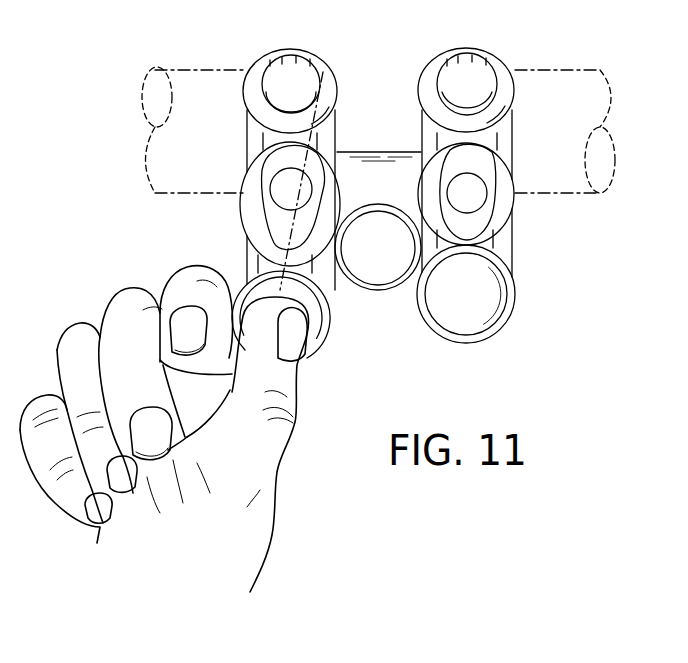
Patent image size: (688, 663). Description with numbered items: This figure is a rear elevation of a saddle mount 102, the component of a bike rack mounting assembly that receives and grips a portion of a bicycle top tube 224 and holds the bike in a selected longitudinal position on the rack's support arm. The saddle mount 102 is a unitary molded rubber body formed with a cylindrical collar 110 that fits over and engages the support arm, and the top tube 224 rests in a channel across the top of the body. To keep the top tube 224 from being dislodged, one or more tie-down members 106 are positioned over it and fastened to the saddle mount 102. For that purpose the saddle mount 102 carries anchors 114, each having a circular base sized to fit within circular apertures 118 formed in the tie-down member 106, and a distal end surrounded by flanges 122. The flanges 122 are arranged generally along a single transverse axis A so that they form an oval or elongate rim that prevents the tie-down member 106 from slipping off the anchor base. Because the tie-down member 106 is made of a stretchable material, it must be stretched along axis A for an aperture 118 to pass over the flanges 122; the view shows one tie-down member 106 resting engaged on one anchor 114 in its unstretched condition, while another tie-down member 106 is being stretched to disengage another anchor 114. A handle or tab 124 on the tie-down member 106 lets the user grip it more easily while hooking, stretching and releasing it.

The saddle mount 102 is at (386, 130).
The tie-down member 106 is at (272, 52).
The cylindrical collar 110 is at (377, 293).
The anchor 114 is at (263, 183).
The circular aperture 118 is at (476, 88).
The flange 122 is at (0, 22).
The handle or tab 124 is at (486, 304).
The top tube 224 is at (575, 70).
The transverse axis A is at (323, 72).